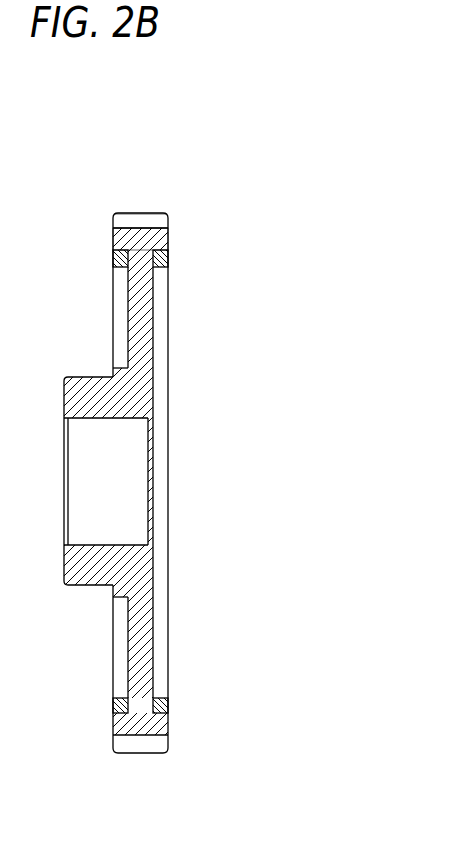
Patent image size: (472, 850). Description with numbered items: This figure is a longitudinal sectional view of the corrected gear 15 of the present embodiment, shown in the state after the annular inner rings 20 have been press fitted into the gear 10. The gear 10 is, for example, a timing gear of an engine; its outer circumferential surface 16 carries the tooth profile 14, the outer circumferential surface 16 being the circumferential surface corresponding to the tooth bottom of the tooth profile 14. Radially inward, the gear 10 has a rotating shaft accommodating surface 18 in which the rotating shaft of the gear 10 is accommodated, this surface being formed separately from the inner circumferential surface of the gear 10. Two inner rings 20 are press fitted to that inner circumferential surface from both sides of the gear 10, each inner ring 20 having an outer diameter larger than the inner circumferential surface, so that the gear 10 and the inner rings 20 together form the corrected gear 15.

The gear 10 is at (90, 612).
The tooth profile 14 is at (133, 219).
The corrected gear 15 is at (157, 92).
The outer circumferential surface 16 is at (149, 219).
The rotating shaft accommodating surface 18 is at (93, 418).
The inner ring 20 is at (114, 262).